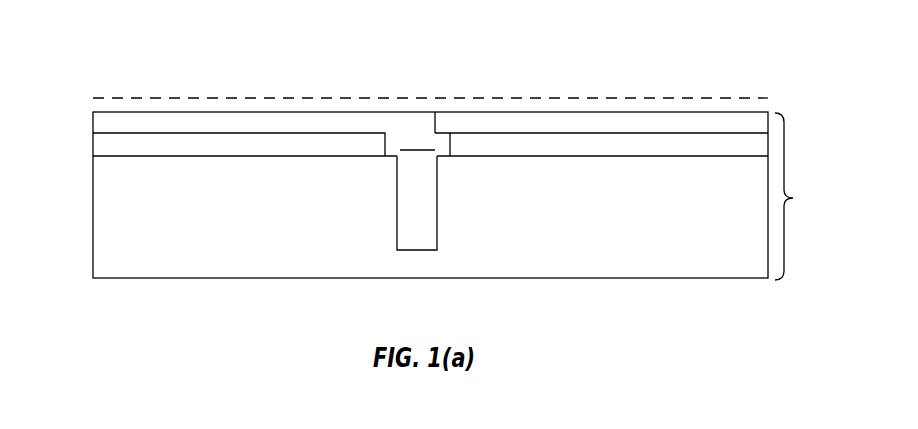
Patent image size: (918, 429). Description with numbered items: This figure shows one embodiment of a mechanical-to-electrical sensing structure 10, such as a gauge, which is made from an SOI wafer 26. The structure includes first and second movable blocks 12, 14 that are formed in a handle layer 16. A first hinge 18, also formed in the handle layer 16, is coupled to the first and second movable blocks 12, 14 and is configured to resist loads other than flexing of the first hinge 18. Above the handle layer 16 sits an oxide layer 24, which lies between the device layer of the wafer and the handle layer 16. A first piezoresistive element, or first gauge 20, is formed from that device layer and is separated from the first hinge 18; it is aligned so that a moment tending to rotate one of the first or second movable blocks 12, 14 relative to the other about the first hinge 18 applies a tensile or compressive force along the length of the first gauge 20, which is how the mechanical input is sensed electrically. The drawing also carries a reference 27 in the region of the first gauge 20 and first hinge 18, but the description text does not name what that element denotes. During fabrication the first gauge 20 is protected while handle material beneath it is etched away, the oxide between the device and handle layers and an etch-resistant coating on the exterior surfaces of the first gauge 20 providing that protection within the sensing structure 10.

The mechanical-to-electrical sensing structure 10 is at (432, 173).
The first movable block 12 is at (363, 190).
The second movable block 14 is at (492, 190).
The handle layer 16 is at (110, 218).
The first hinge 18 is at (428, 203).
The first gauge 20 is at (417, 123).
The oxide layer 24 is at (712, 147).
The SOI wafer 26 is at (153, 98).
The bottom of opening 27 is at (420, 148).